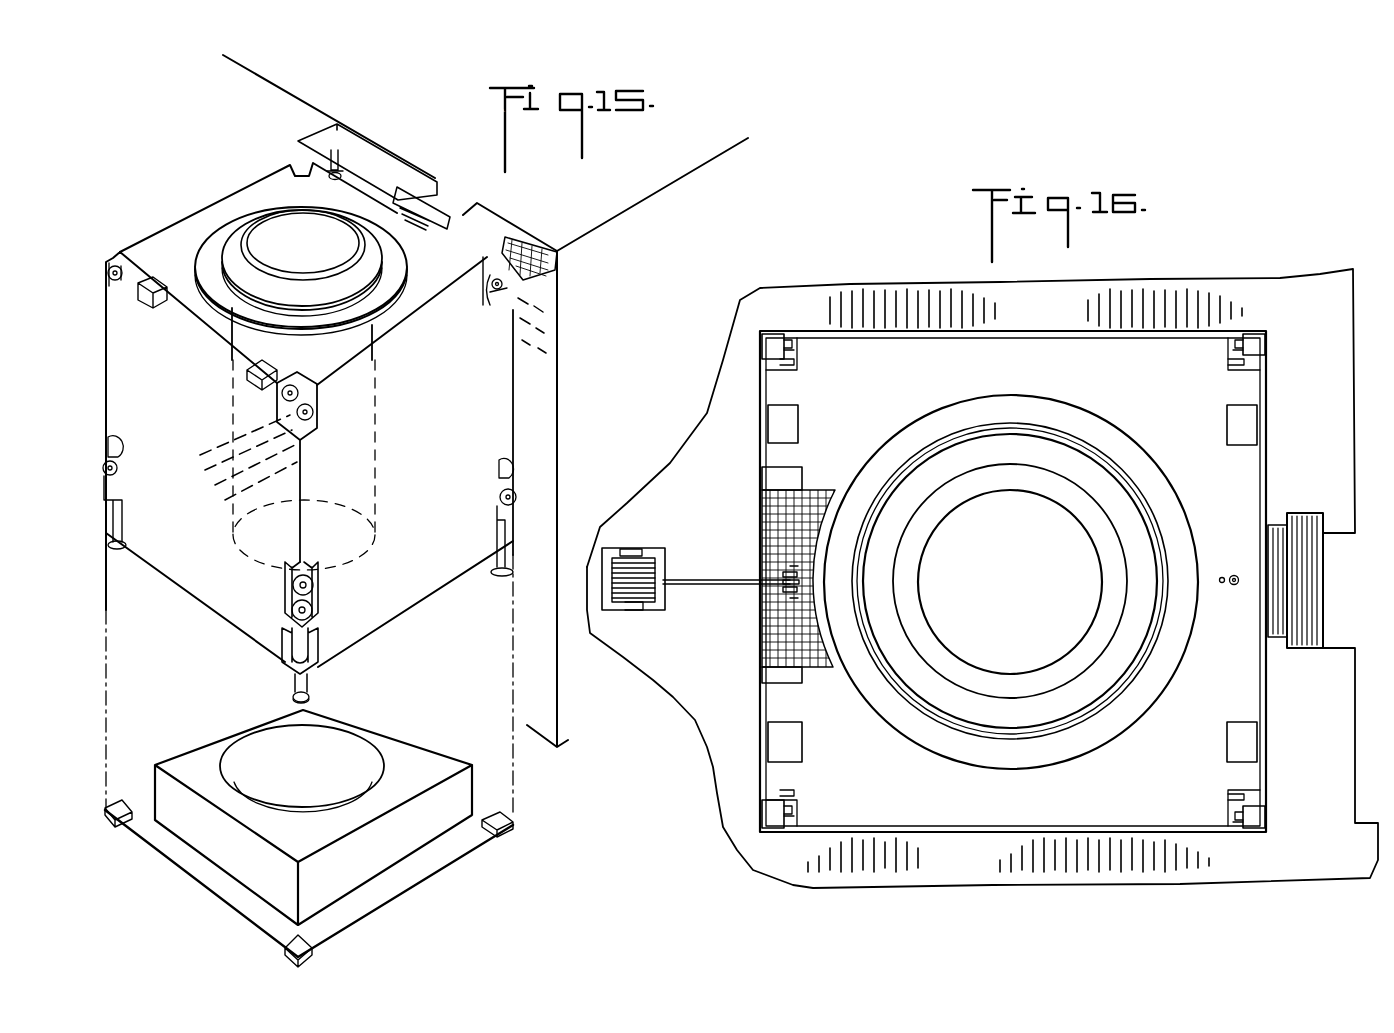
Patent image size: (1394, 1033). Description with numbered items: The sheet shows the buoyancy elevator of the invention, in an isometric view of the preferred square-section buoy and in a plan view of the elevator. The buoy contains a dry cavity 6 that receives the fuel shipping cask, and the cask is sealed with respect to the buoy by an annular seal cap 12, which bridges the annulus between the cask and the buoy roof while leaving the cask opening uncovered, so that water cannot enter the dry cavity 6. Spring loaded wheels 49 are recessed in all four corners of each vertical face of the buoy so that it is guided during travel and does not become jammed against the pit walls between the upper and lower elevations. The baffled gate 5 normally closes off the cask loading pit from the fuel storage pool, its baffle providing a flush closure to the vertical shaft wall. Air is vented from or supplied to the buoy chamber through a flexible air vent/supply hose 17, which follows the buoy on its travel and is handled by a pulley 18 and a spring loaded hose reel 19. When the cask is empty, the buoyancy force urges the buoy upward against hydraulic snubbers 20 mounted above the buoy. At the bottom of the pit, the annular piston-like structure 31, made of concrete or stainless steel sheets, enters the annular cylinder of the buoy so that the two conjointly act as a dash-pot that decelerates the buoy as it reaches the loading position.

In FIG. 15, the baffled gate 5 is at (440, 205).
In FIG. 16, the baffled gate 5 is at (1308, 582).
In FIG. 15, the dry cavity 6 is at (368, 433).
In FIG. 15, the annular seal cap 12 is at (238, 227).
In FIG. 16, the annular seal cap 12 is at (1100, 455).
In FIG. 16, the air vent/supply hose 17 is at (717, 578).
In FIG. 16, the pulley 18 is at (783, 595).
In FIG. 16, the spring loaded hose reel 19 is at (645, 549).
In FIG. 15, the hydraulic snubbers 20 is at (342, 133).
In FIG. 15, the annular piston-like structure 31 is at (362, 745).
In FIG. 15, the spring loaded wheels 49 is at (104, 462).
In FIG. 16, the spring loaded wheels 49 is at (790, 332).